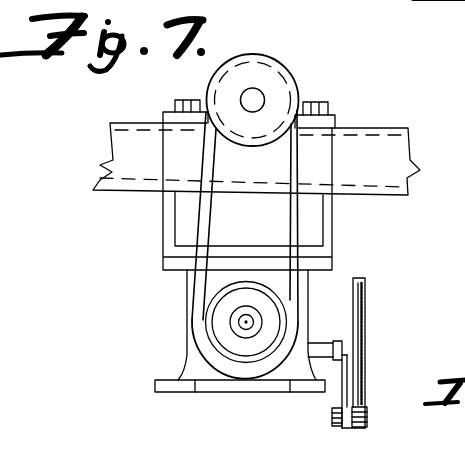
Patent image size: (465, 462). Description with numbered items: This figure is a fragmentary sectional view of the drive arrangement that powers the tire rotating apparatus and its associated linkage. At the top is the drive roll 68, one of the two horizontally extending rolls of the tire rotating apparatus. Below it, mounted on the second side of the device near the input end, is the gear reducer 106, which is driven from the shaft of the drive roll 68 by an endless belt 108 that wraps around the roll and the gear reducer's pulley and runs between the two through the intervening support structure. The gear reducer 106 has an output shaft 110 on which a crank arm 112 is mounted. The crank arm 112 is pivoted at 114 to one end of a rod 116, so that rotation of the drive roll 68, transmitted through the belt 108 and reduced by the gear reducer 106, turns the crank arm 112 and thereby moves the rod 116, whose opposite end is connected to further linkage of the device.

The drive roll 68 is at (263, 97).
The gear reducer 106 is at (187, 327).
The endless belt 108 is at (298, 170).
The output shaft 110 is at (338, 341).
The crank arm 112 is at (343, 390).
The pivot 114 is at (371, 412).
The rod 116 is at (366, 315).